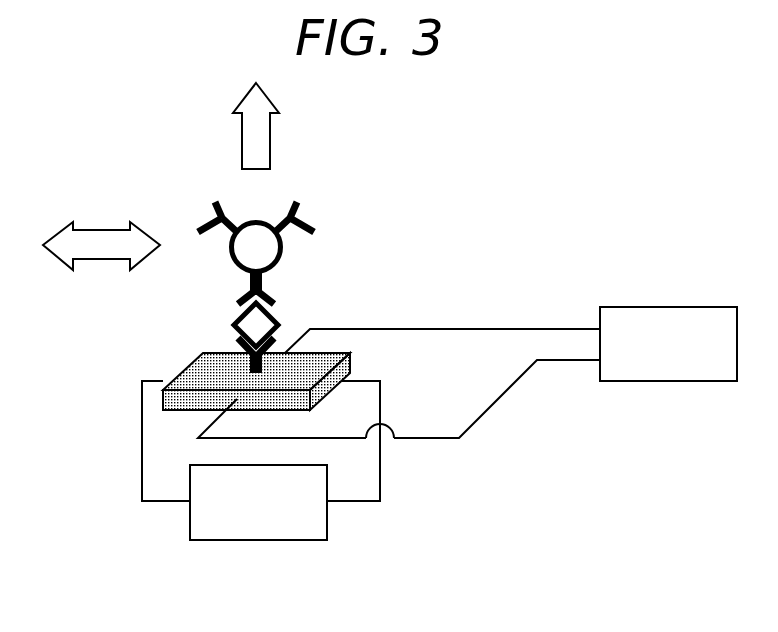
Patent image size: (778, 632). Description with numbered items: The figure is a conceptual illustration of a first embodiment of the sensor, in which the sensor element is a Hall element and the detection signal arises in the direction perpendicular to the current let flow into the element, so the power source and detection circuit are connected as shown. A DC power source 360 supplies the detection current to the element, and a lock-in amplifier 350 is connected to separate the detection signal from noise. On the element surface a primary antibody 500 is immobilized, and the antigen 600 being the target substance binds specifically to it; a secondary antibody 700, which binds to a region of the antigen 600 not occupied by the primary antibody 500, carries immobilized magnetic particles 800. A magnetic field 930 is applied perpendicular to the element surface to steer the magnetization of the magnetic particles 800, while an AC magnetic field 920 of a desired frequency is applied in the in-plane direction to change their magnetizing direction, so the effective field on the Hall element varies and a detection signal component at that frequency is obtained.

The lock-in amplifier 350 is at (667, 307).
The DC power source 360 is at (327, 522).
The primary antibody 500 is at (243, 359).
The antigen 600 is at (260, 323).
The secondary antibody 700 is at (263, 286).
The magnetic particles 800 is at (253, 230).
The AC magnetic field 920 is at (260, 148).
The magnetic field 930 is at (100, 243).